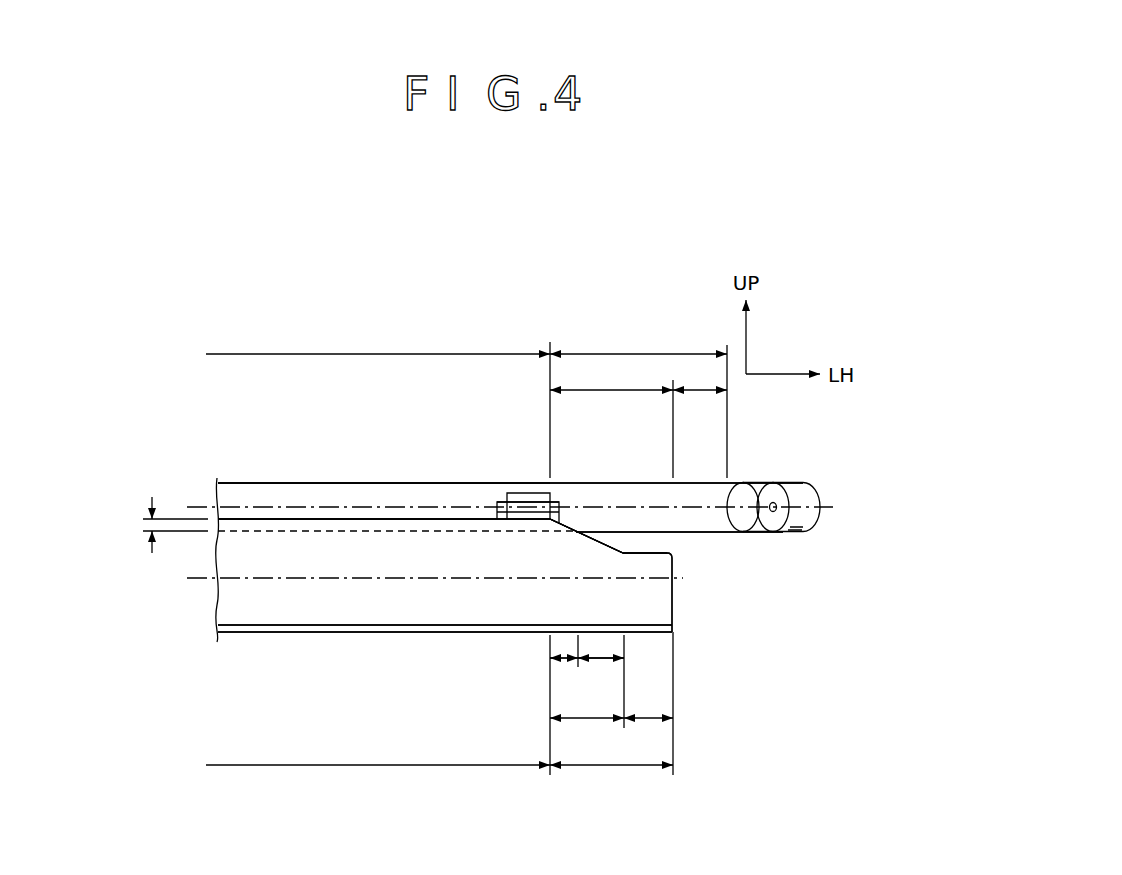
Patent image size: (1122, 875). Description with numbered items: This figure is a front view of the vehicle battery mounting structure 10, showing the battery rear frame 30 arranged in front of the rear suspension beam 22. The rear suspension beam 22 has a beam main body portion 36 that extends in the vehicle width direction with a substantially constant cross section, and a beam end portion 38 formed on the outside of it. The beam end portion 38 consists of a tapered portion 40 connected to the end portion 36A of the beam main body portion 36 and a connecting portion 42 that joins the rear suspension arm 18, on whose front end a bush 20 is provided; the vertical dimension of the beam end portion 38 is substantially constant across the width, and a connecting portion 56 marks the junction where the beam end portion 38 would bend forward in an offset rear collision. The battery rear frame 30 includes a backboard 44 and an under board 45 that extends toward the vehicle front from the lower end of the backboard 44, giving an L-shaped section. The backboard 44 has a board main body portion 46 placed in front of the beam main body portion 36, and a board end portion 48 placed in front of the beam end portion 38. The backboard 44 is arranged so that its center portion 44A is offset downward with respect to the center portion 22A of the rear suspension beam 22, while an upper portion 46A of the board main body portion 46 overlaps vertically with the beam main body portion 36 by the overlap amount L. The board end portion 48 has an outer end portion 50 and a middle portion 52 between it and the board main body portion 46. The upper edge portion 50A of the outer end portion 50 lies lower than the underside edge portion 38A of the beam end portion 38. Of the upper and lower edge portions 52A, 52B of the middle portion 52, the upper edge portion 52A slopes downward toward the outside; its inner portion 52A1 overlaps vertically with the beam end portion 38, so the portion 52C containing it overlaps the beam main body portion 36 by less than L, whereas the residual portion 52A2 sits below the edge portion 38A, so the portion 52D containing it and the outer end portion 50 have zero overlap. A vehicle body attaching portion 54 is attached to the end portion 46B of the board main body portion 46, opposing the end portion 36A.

The vehicle battery mounting structure 10 is at (348, 290).
The rear suspension arm 18 is at (758, 482).
The bush 20 is at (810, 498).
The rear suspension beam 22 is at (612, 253).
The center portion of the rear suspension beam 22A is at (198, 506).
The battery rear frame 30 is at (285, 633).
The beam main body portion 36 is at (505, 353).
The end portion of the beam main body portion 36A is at (528, 483).
The beam end portion 38 is at (596, 353).
The edge portion on the underside of the beam end portion 38A is at (698, 533).
The tapered portion 40 is at (633, 390).
The connecting portion 42 is at (702, 390).
The backboard 44 is at (660, 595).
The center portion of the backboard 44A is at (197, 578).
The under board 45 is at (658, 632).
The board main body portion 46 is at (497, 765).
The upper portion of the board main body portion 46A is at (397, 525).
The end portion of the board main body portion 46B is at (523, 510).
The board end portion 48 is at (580, 765).
The outer end portion 50 is at (645, 720).
The edge portion on the upper side of the outer end portion 50A is at (652, 547).
The middle portion 52 is at (590, 720).
The edge portion on the upper side of the middle portion 52A is at (553, 434).
The inner portion of the edge portion 52A1 is at (570, 528).
The residual portion of the edge portion 52A2 is at (612, 548).
The edge portion on the lower side of the middle portion 52B is at (598, 633).
The portion including the inner edge portion 52C is at (562, 667).
The portion including the residual edge portion 52D is at (597, 662).
The vehicle body attaching portion 54 is at (512, 492).
The connecting portion between the beam end portion and the beam main body portion 56 is at (550, 340).
The overlap amount L is at (152, 545).